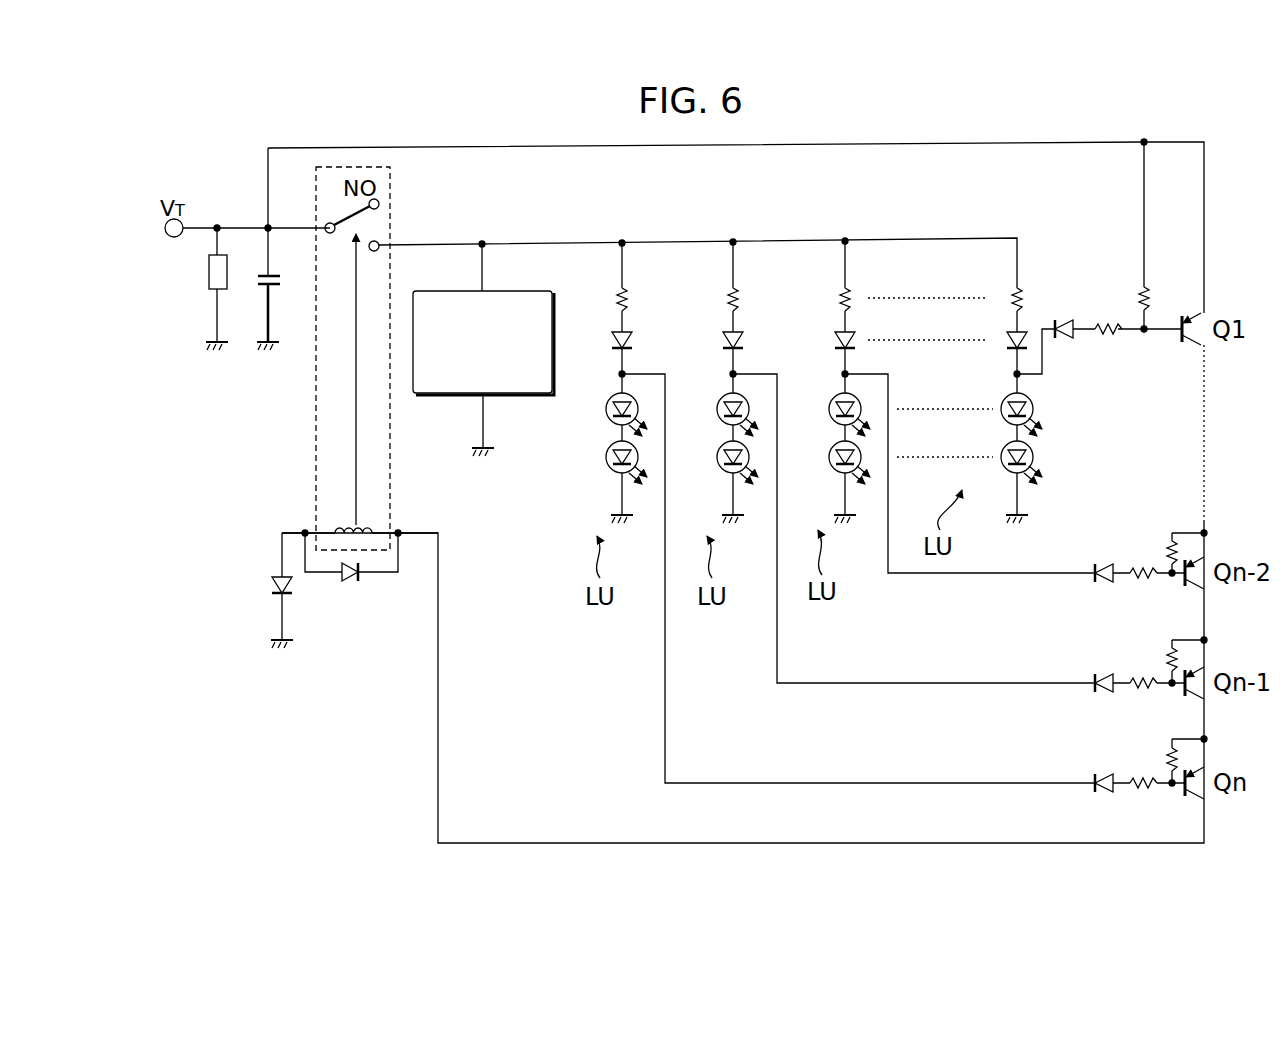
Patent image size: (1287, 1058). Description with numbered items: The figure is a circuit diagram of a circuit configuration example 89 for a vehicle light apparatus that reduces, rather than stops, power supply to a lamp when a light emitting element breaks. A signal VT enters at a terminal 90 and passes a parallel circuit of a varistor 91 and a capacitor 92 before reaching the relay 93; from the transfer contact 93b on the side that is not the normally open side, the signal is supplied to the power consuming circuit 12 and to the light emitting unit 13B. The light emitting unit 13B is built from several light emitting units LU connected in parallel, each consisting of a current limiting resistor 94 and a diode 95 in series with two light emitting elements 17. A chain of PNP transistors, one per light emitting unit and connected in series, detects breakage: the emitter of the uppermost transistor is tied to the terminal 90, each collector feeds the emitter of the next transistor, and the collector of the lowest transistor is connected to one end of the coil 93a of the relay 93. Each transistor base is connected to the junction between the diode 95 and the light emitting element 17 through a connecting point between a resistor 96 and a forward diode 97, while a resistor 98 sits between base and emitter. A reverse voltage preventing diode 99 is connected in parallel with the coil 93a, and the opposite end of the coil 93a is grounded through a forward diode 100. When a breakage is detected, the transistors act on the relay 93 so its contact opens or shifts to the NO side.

The power consuming circuit 12 is at (456, 396).
The light emitting unit 13B is at (994, 231).
The light emitting element 17 is at (606, 412).
The circuit configuration example 89 is at (1222, 144).
The terminal 90 is at (171, 238).
The varistor 91 is at (209, 282).
The capacitor 92 is at (264, 292).
The relay 93 is at (392, 210).
The coil 93a is at (340, 527).
The transfer contact 93b is at (326, 223).
The current limiting resistor 94 is at (616, 298).
The diode 95 is at (612, 340).
The resistor 96 is at (1110, 335).
The forward diode 97 is at (1066, 318).
The resistor 98 is at (1138, 302).
The reverse voltage preventing diode 99 is at (352, 584).
The forward diode 100 is at (276, 572).